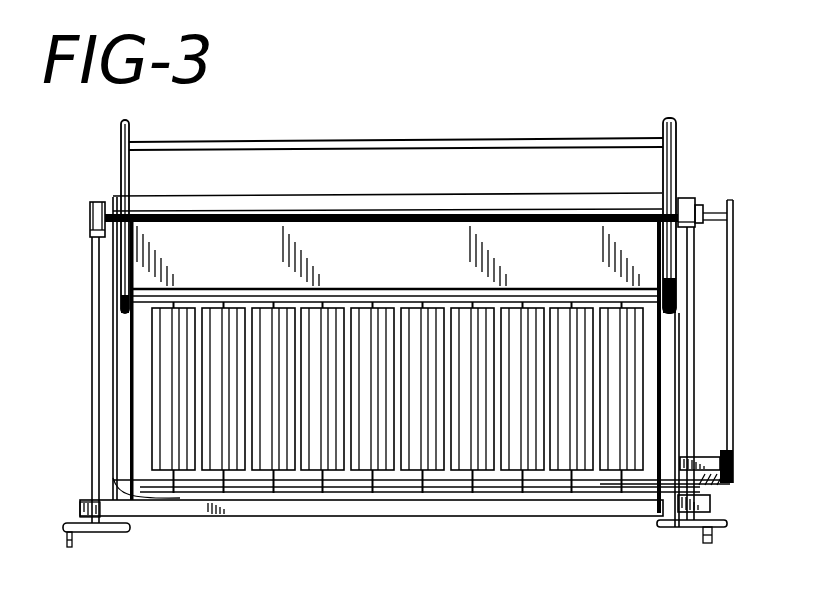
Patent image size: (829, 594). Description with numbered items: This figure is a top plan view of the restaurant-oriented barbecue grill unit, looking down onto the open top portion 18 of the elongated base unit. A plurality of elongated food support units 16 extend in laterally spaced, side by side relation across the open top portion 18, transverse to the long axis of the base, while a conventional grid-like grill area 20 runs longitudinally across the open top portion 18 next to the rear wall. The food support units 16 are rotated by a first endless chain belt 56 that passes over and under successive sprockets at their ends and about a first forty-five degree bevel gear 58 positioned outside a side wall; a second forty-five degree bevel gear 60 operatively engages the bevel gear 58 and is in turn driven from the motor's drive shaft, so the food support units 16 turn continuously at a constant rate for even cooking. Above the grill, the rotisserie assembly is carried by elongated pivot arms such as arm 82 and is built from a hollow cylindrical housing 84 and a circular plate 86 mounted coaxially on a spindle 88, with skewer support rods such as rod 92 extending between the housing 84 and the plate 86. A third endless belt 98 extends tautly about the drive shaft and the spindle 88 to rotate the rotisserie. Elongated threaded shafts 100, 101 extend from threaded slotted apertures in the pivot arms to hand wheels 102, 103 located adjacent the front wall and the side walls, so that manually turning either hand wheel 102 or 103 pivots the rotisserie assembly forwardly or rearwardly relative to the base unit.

The food support unit 16 is at (268, 312).
The open top portion 18 is at (147, 424).
The grill area 20 is at (445, 240).
The first endless chain belt 56 is at (112, 478).
The first bevel gear 58 is at (717, 490).
The second bevel gear 60 is at (733, 478).
The pivot arm 82 is at (100, 215).
The cylindrical housing 84 is at (668, 118).
The circular plate 86 is at (125, 122).
The spindle 88 is at (315, 197).
The skewer support rod 92 is at (318, 140).
The third endless belt 98 is at (733, 322).
The threaded shaft 100 is at (690, 385).
The threaded shaft 101 is at (92, 362).
The hand wheel 102 is at (677, 528).
The hand wheel 103 is at (92, 533).